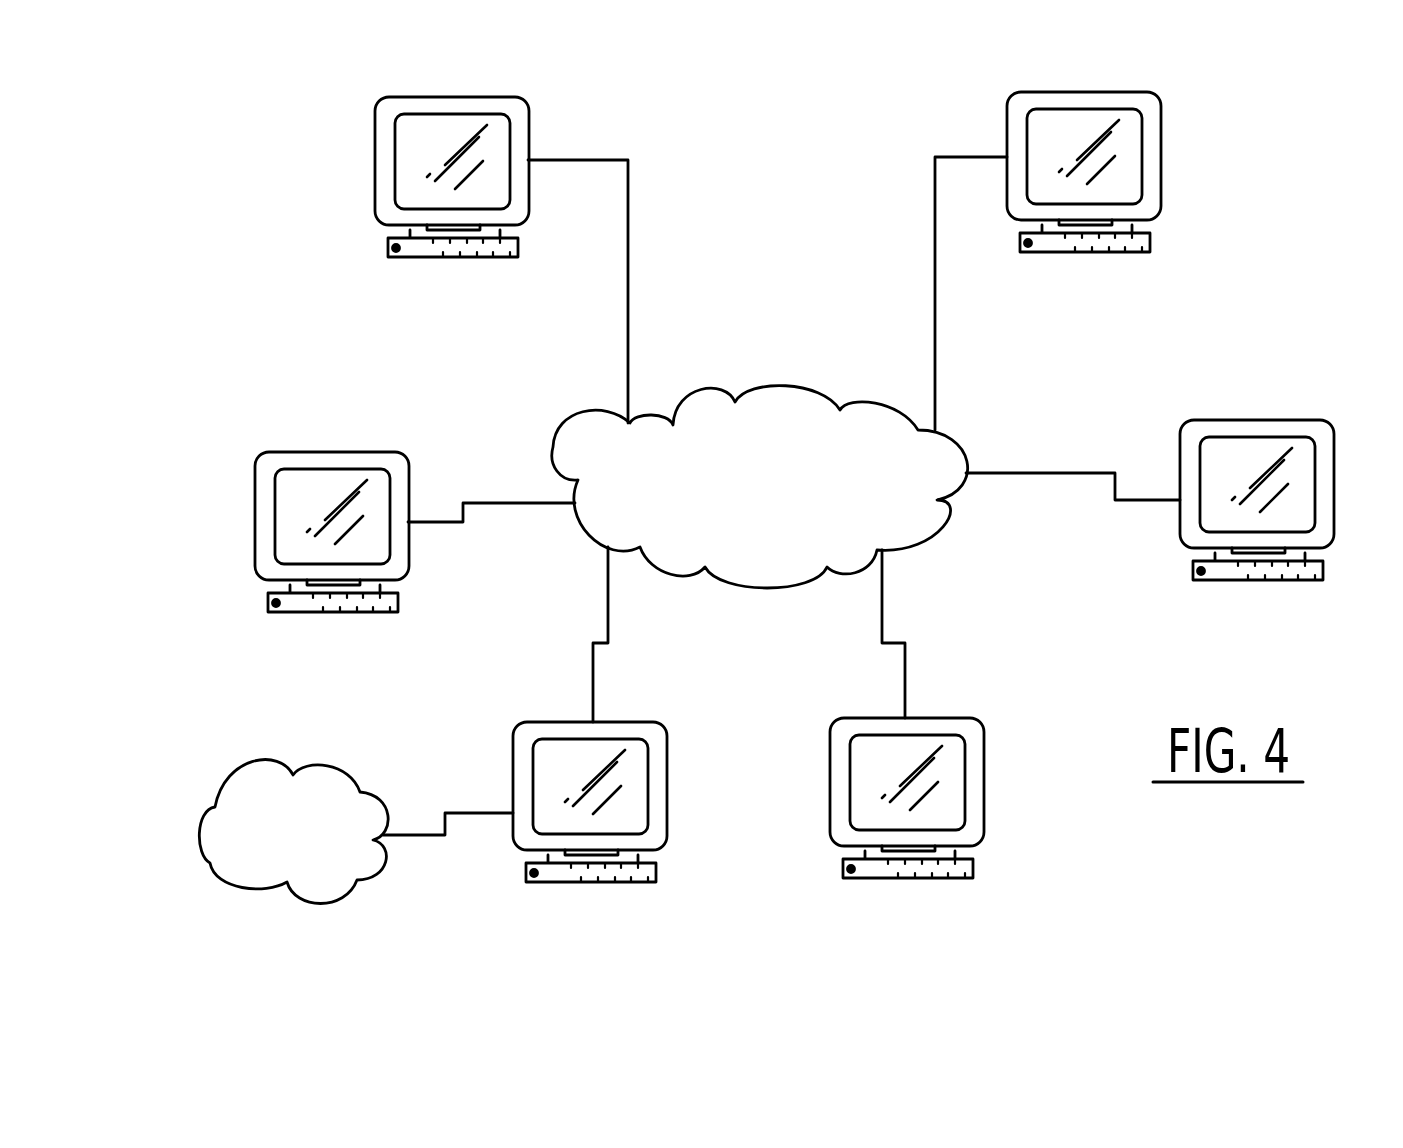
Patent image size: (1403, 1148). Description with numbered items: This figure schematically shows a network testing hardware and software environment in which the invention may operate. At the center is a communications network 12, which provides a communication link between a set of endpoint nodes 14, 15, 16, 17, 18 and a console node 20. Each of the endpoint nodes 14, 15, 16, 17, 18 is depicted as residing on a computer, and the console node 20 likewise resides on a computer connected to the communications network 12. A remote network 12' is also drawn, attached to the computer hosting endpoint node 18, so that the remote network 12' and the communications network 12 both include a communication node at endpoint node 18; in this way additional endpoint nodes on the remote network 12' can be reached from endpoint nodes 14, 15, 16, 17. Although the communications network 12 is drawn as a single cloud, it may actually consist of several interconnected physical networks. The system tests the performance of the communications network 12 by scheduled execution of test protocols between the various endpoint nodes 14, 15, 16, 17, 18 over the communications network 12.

The communications network 12 is at (760, 467).
The remote network 12' is at (293, 808).
The endpoint node 14 is at (1333, 468).
The endpoint node 15 is at (1162, 139).
The endpoint node 16 is at (528, 147).
The endpoint node 17 is at (408, 500).
The endpoint node 18 is at (668, 772).
The console node 20 is at (983, 767).